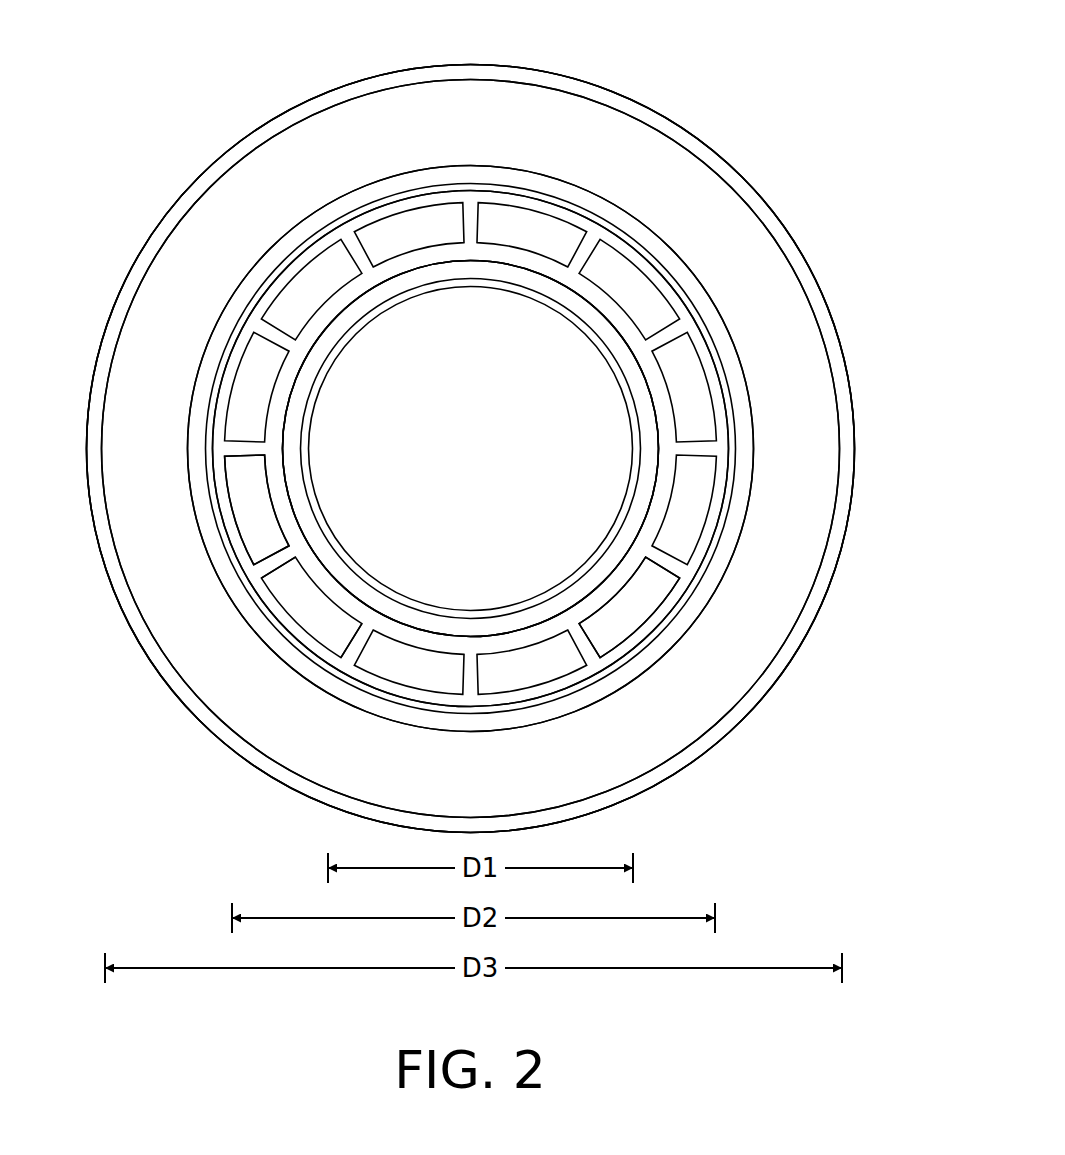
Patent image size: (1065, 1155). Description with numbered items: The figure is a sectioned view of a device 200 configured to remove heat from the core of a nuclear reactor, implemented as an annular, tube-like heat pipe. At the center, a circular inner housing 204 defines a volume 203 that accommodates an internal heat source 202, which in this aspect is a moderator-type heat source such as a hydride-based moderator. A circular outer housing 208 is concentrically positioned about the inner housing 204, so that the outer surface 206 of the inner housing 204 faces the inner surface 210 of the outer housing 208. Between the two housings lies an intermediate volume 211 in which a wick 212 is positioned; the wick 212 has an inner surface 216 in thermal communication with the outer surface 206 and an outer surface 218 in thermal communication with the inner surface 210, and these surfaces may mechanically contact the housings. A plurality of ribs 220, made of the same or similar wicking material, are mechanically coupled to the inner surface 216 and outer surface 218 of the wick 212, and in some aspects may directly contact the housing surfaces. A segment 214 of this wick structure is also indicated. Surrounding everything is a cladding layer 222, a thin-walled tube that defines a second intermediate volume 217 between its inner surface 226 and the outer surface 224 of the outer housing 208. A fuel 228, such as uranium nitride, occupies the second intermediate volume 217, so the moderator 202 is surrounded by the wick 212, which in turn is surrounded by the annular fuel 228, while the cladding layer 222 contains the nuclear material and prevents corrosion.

The device 200 is at (810, 60).
The heat source 202 is at (550, 450).
The volume 203 is at (382, 598).
The inner housing 204 is at (328, 318).
The outer surface 206 is at (590, 305).
The outer housing 208 is at (540, 183).
The inner surface 210 is at (227, 340).
The intermediate volume 211 is at (253, 523).
The wick 212 is at (718, 453).
The electrode segment 214 is at (612, 632).
The inner surface 216 is at (650, 496).
The second intermediate volume 217 is at (758, 278).
The outer surface 218 is at (717, 552).
The plurality of ribs 220 is at (358, 652).
The cladding layer 222 is at (287, 782).
The outer surface 224 is at (725, 585).
The inner surface 226 is at (792, 632).
The fuel 228 is at (633, 733).